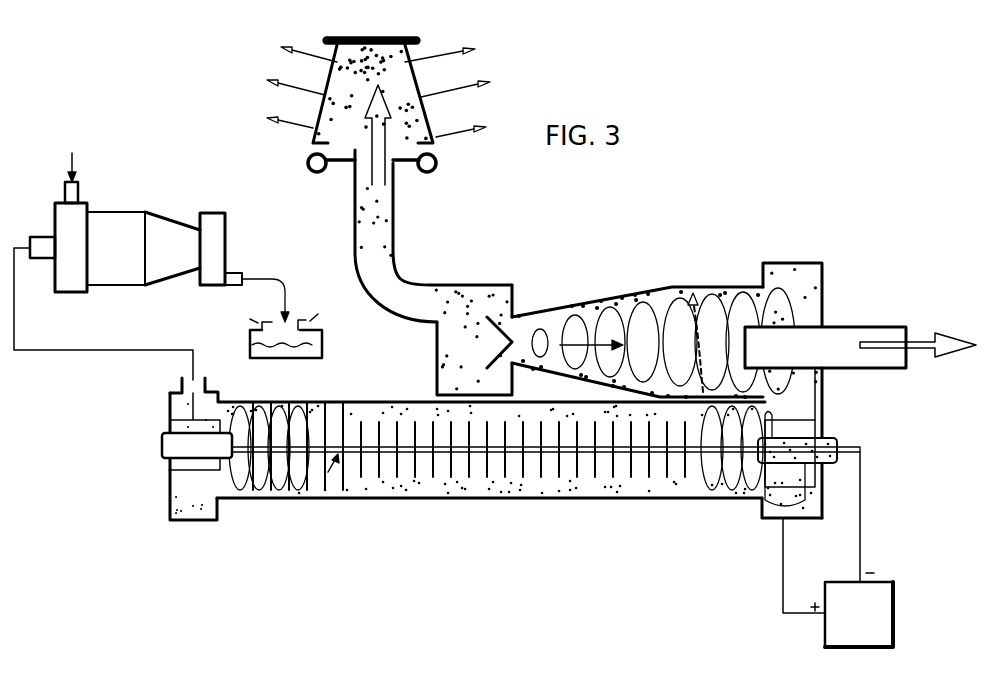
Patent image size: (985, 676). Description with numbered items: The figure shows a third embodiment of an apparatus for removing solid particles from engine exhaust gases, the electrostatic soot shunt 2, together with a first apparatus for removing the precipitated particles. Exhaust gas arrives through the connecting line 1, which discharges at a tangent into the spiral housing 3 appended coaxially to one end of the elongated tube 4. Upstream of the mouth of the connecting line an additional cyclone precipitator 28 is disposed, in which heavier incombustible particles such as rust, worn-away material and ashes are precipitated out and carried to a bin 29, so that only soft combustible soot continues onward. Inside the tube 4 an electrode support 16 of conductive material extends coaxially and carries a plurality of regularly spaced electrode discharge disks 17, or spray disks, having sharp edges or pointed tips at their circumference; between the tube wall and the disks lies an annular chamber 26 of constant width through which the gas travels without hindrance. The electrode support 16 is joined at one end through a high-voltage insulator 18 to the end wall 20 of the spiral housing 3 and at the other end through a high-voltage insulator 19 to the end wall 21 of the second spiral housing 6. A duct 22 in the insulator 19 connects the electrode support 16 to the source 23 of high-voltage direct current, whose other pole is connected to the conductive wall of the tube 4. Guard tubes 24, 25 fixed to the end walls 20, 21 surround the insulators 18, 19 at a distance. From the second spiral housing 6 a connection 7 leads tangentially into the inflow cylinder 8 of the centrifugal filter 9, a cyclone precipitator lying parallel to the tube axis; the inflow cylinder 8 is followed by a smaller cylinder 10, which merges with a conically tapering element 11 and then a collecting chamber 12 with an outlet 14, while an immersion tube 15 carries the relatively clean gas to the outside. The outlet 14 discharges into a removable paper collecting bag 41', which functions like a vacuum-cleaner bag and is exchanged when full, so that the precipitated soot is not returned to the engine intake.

The connecting line 1 is at (62, 190).
The electrostatic soot shunt 2 is at (520, 510).
The spiral housing 3 is at (172, 520).
The elongated tube 4 is at (598, 500).
The second spiral housing 6 is at (768, 520).
The connection 7 is at (826, 395).
The inflow cylinder 8 is at (790, 263).
The centrifugal filter 9 is at (645, 285).
The cylinder 10 is at (725, 290).
The conically tapering element 11 is at (587, 305).
The collecting chamber 12 is at (489, 285).
The outlet 14 is at (392, 213).
The immersion tube 15 is at (855, 327).
The electrode support 16 is at (643, 453).
The electrode discharge disks 17 is at (336, 490).
The high-voltage insulator 18 is at (168, 439).
The high-voltage insulator 19 is at (835, 438).
The end wall 20 is at (168, 498).
The end wall 21 is at (830, 436).
The duct 22 is at (862, 448).
The source of high-voltage direct current 23 is at (895, 607).
The guard tube 24 is at (185, 472).
The guard tube 25 is at (816, 497).
The annular chamber 26 is at (428, 486).
The cyclone precipitator 28 is at (118, 222).
The bin 29 is at (327, 337).
The removable collecting bag 41' is at (383, 93).